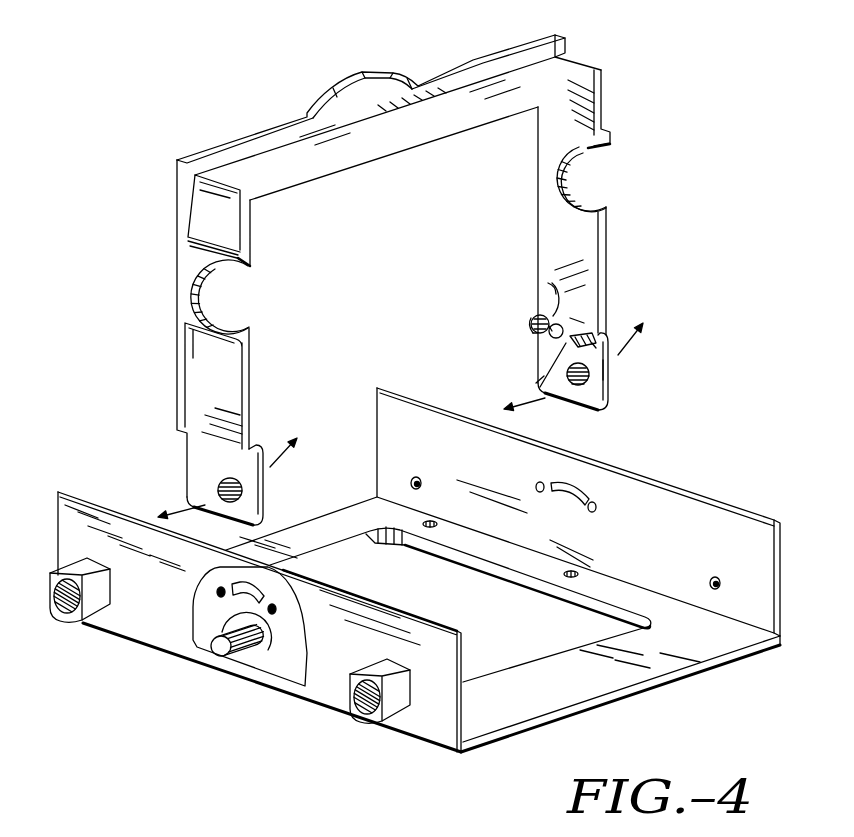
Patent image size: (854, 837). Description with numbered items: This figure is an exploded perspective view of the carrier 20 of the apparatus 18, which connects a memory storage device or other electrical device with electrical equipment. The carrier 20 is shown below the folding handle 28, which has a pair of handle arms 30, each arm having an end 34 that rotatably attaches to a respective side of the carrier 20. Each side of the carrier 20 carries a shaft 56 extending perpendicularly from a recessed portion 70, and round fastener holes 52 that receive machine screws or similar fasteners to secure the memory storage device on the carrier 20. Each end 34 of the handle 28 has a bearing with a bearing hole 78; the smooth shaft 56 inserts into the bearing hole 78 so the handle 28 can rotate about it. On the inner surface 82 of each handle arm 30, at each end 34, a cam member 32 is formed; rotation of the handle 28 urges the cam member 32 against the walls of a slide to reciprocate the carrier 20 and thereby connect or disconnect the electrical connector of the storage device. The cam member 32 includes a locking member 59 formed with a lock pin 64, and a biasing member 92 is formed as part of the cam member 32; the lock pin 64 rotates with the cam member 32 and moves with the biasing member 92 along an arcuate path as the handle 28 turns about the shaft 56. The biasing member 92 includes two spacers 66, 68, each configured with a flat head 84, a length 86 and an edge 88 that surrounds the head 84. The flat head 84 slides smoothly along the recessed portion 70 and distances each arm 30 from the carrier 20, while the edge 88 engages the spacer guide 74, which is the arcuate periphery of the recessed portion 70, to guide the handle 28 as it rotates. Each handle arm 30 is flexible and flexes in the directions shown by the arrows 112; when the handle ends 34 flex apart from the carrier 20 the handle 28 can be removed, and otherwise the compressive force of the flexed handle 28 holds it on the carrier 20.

The apparatus 18 is at (256, 49).
The carrier 20 is at (712, 505).
The folding handle 28 is at (477, 58).
The handle arm 30 is at (582, 233).
The cam member 32 is at (576, 326).
The end 34 is at (612, 393).
The fastener hole 52 is at (413, 480).
The shaft 56 is at (222, 648).
The locking member 59 is at (550, 329).
The lock pin 64 is at (560, 290).
The spacer 66 is at (532, 318).
The spacer 68 is at (600, 383).
The recessed portion 70 is at (283, 668).
The spacer guide 74 is at (300, 648).
The bearing hole 78 is at (581, 387).
The inner surface 82 is at (533, 334).
The head 84 is at (555, 283).
The length 86 is at (530, 312).
The edge 88 is at (528, 325).
The biasing member 92 is at (460, 256).
The arrows 112 is at (645, 329).